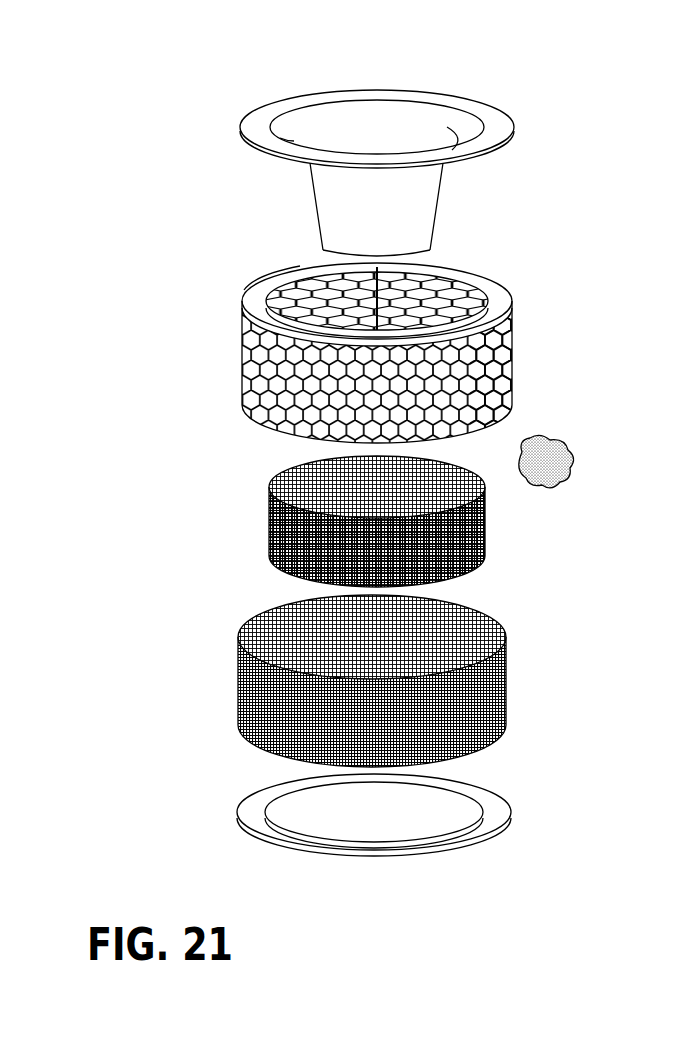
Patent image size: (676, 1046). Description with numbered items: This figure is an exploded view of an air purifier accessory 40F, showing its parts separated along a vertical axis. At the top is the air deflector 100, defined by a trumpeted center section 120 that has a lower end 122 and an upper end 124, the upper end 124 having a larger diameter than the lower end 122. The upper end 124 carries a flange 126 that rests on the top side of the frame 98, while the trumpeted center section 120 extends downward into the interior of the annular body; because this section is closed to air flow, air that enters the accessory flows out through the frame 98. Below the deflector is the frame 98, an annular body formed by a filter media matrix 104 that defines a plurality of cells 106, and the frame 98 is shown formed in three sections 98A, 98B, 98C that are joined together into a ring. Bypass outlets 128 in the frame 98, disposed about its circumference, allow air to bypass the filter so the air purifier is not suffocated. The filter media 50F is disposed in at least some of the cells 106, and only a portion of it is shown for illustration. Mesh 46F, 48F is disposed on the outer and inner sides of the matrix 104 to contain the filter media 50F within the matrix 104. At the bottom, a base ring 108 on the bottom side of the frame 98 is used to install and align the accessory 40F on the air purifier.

The accessory 40F is at (148, 73).
The air deflector 100 is at (443, 92).
The flange 126 is at (298, 103).
The upper end 124 is at (462, 130).
The trumpeted center section 120 is at (323, 187).
The lower end 122 is at (333, 251).
The frame 98 is at (448, 267).
The section 98B is at (493, 297).
The section 98C is at (268, 283).
The section 98A is at (510, 337).
The bypass outlet 128 is at (280, 318).
The filter media matrix 104 is at (287, 427).
The cell 106 is at (508, 387).
The filter media 50F is at (563, 483).
The mesh 48F is at (297, 558).
The mesh 46F is at (503, 740).
The base ring 108 is at (505, 837).